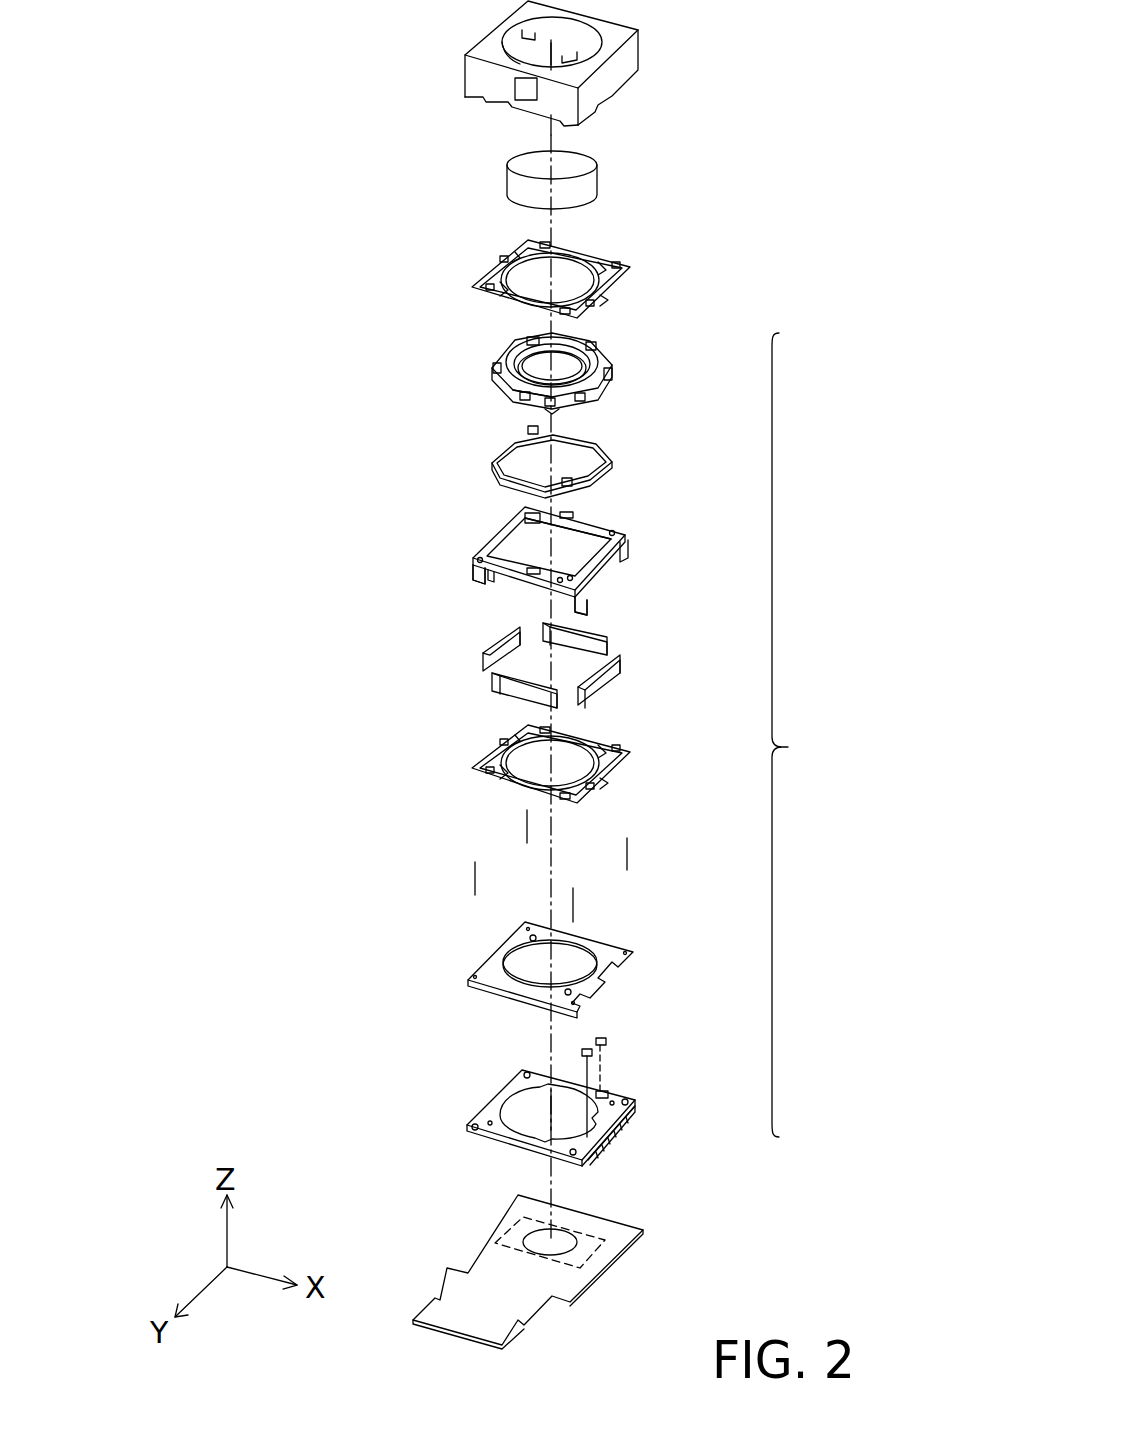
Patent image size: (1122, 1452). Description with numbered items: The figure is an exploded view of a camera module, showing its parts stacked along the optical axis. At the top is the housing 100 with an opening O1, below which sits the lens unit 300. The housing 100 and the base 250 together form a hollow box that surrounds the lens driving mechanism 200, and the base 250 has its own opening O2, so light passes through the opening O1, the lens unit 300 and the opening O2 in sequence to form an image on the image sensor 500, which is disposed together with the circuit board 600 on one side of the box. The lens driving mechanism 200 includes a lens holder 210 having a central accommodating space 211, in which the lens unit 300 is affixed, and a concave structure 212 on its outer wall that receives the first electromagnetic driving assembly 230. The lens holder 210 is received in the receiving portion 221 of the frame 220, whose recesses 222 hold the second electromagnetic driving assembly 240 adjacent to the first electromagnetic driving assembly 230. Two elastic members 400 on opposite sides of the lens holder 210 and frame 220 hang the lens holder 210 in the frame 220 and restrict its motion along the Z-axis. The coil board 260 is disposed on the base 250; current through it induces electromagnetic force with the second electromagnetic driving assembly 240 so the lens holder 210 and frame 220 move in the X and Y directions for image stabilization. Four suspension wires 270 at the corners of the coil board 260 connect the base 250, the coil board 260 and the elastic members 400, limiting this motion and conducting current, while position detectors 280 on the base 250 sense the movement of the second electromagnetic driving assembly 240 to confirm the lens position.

The housing 100 is at (630, 56).
The opening O1 is at (568, 58).
The lens unit 300 is at (520, 193).
The elastic member 400 is at (475, 287).
The lens holder 210 is at (620, 372).
The accommodating space 211 is at (565, 368).
The concave structure 212 is at (512, 396).
The first electromagnetic driving assembly 230 is at (498, 466).
The frame 220 is at (475, 563).
The receiving portion 221 is at (578, 545).
The recess 222 is at (605, 575).
The second electromagnetic driving assembly 240 is at (495, 686).
The suspension wire 270 is at (525, 835).
The coil board 260 is at (605, 967).
The base 250 is at (493, 1112).
The opening O2 is at (533, 1110).
The position detector 280 is at (610, 1043).
The image sensor 500 is at (607, 1247).
The circuit board 600 is at (485, 1250).
The lens driving mechanism 200 is at (809, 735).